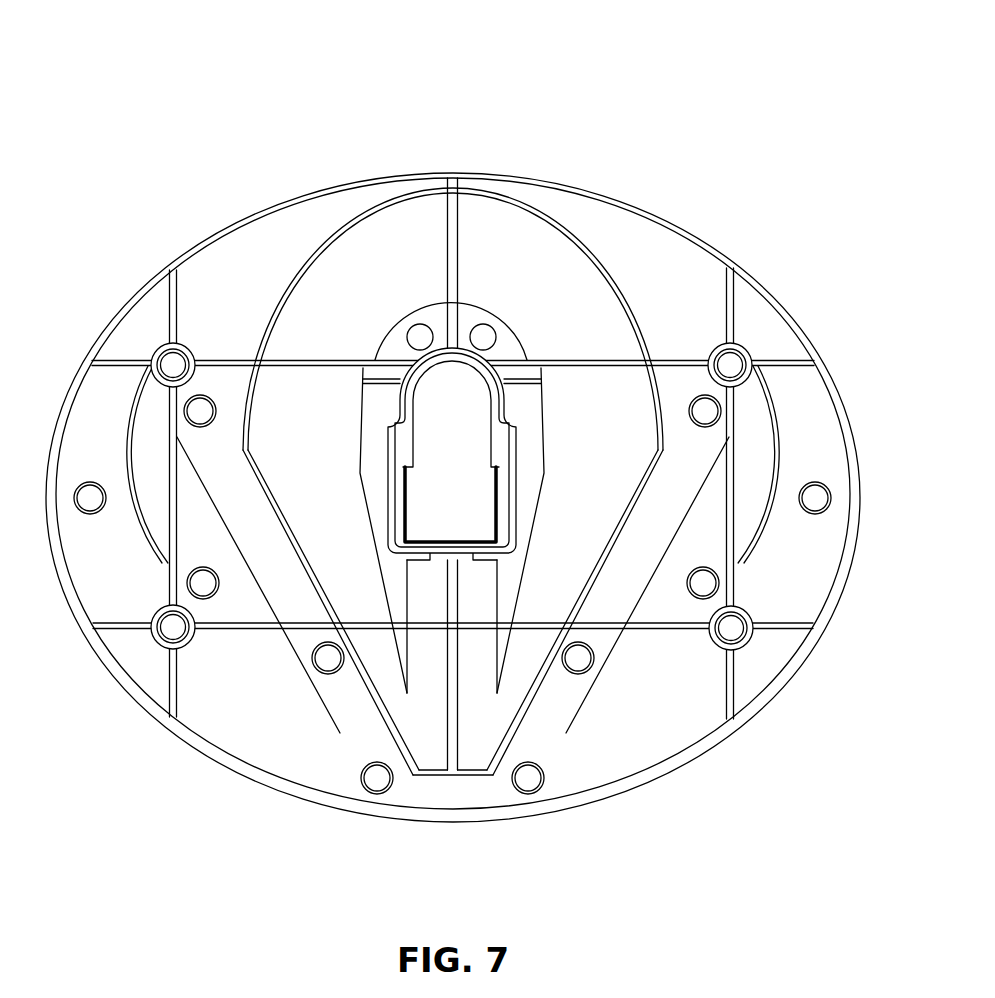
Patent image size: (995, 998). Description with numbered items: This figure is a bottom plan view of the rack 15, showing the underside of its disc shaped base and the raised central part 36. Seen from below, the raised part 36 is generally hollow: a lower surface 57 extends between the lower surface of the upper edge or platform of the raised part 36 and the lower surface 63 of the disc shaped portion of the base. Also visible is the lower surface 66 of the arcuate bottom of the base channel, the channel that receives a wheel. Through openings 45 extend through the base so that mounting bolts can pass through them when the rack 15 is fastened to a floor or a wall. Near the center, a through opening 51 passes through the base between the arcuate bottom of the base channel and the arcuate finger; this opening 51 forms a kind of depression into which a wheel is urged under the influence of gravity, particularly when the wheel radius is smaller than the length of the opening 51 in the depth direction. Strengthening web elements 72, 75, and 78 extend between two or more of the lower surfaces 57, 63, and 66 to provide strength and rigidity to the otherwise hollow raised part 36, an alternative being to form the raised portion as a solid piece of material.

The rack 15 is at (468, 115).
The raised central part 36 is at (535, 250).
The through openings 45 is at (172, 365).
The through opening 51 is at (460, 430).
The lower surface 57 is at (545, 583).
The lower surface 63 is at (540, 707).
The lower surface 66 is at (450, 750).
The strengthening web element 72 is at (779, 612).
The strengthening web element 75 is at (772, 362).
The strengthening web element 78 is at (447, 280).